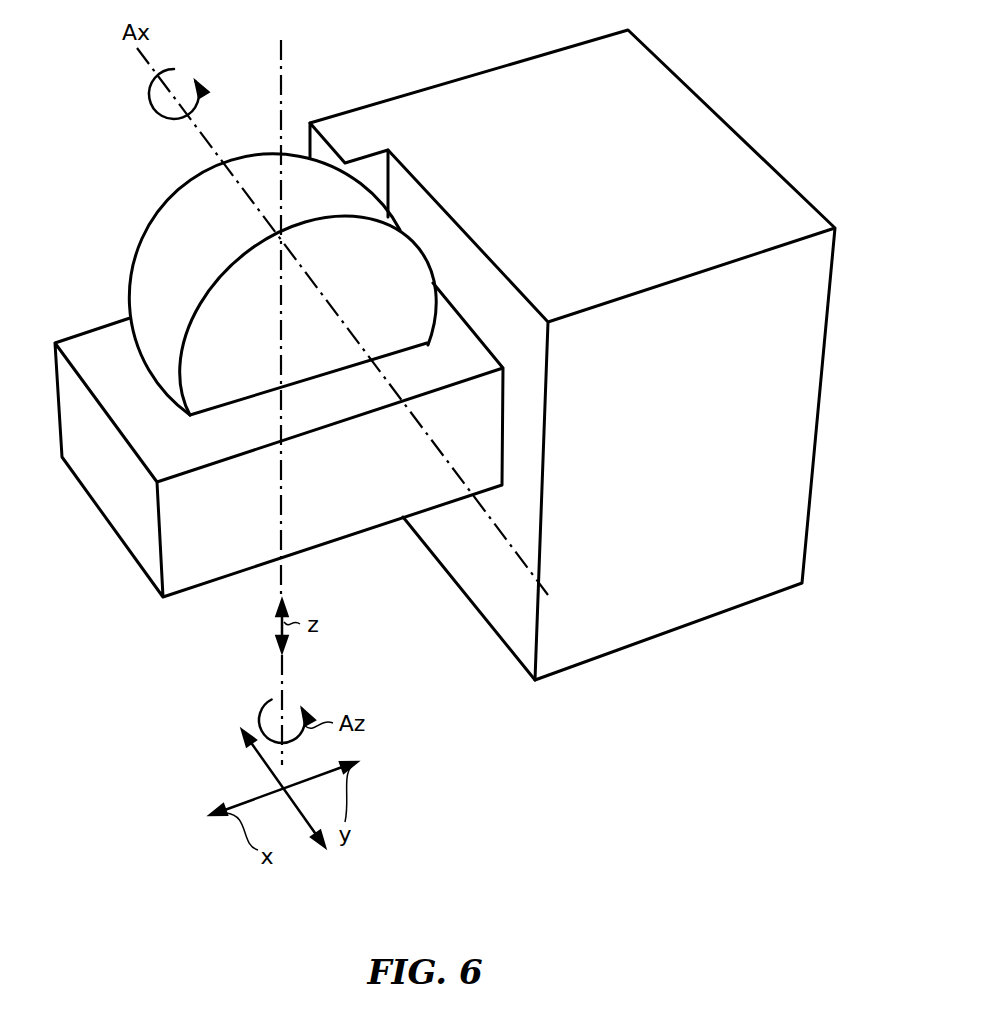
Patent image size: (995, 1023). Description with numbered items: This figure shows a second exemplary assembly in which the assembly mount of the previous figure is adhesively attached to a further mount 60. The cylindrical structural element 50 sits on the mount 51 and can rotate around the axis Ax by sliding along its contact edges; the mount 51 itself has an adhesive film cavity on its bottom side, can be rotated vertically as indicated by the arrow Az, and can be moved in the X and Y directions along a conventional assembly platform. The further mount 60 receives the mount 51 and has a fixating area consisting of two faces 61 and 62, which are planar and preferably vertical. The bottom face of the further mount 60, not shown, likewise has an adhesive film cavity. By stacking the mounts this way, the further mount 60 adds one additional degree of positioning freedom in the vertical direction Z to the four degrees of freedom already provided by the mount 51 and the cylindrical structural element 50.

The cylindrical structural element 50 is at (157, 233).
The mount 51 is at (152, 567).
The further mount 60 is at (572, 357).
The face 61 is at (520, 608).
The face 62 is at (370, 168).